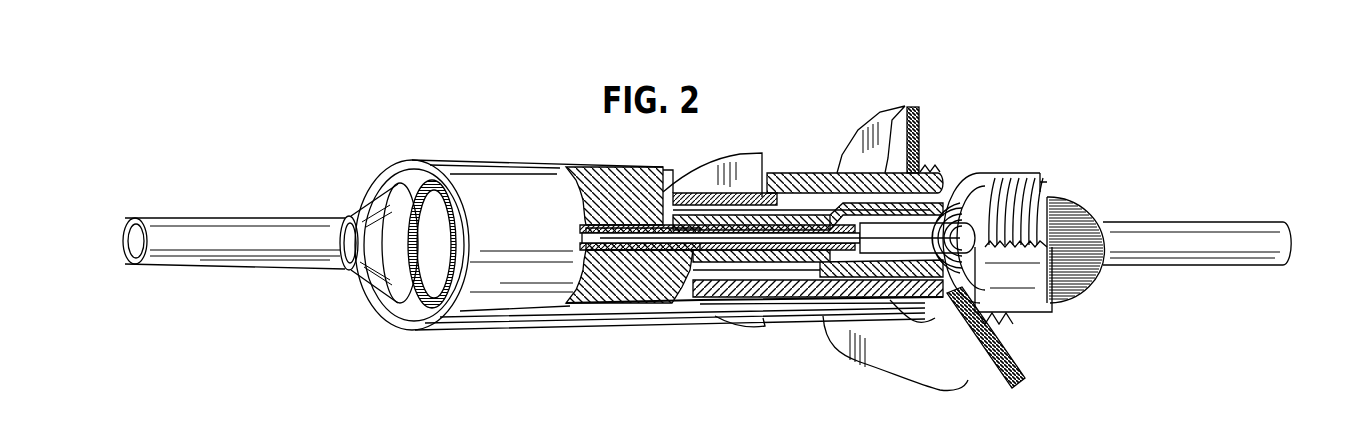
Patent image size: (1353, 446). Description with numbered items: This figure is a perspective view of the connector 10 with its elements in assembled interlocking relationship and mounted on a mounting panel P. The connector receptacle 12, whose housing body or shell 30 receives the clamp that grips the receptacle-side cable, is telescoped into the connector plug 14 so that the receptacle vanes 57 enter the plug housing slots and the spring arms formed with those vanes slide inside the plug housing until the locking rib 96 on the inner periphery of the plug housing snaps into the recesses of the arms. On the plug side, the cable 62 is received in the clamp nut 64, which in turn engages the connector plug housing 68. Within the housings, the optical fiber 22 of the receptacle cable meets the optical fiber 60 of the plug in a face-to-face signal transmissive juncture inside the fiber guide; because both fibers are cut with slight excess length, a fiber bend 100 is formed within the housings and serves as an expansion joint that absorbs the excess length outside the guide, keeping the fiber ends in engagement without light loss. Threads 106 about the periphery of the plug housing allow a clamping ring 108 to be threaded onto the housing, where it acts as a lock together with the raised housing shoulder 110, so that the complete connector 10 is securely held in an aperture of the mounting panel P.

The connector 10 is at (821, 86).
The connector receptacle 12 is at (540, 326).
The connector plug 14 is at (810, 328).
The optical fiber 22 is at (672, 302).
The housing body or shell 30 is at (607, 314).
The receptacle vanes 57 is at (745, 156).
The optical fiber 60 is at (803, 298).
The cable 62 is at (1219, 214).
The clamp nut 64 is at (1085, 202).
The connector plug housing 68 is at (1027, 284).
The locking rib 96 is at (780, 193).
The fiber bend 100 is at (877, 255).
The threads 106 is at (1003, 180).
The clamping ring 108 is at (932, 166).
The raised housing shoulder 110 is at (900, 157).
The mounting panel P is at (914, 106).